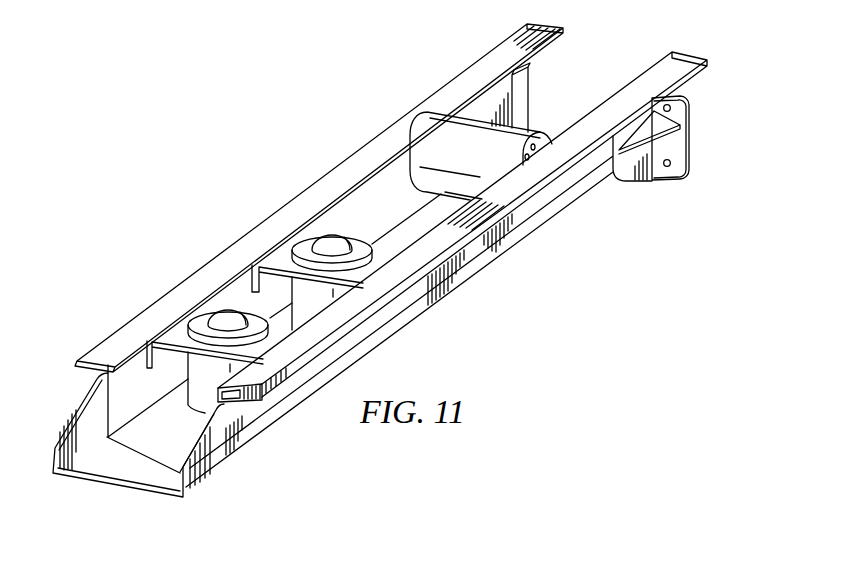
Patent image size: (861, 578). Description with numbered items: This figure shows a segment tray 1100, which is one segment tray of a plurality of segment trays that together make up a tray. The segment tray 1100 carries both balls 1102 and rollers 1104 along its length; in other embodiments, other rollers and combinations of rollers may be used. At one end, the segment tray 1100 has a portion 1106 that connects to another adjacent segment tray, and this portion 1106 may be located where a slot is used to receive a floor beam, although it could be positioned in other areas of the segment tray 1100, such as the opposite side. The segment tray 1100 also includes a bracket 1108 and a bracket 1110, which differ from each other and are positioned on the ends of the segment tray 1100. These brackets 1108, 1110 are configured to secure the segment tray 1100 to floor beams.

The segment tray 1100 is at (465, 270).
The balls 1102 is at (331, 238).
The rollers 1104 is at (427, 133).
The portion 1106 is at (684, 58).
The bracket 1108 is at (212, 462).
The bracket 1110 is at (662, 173).